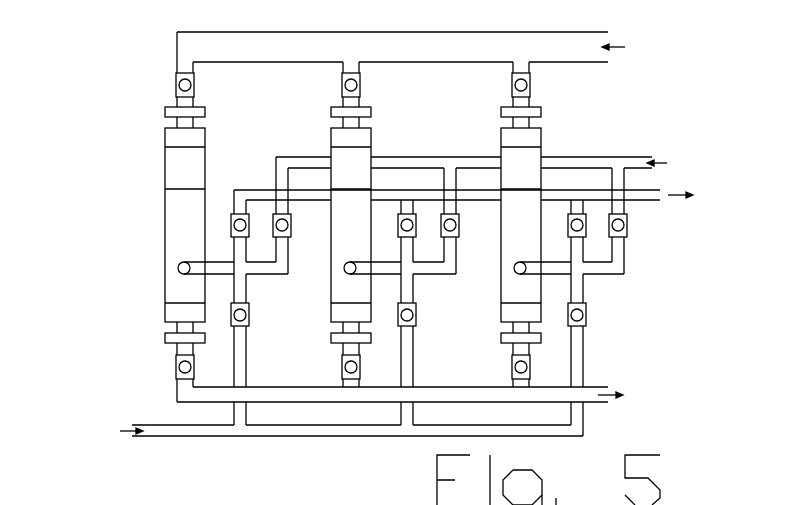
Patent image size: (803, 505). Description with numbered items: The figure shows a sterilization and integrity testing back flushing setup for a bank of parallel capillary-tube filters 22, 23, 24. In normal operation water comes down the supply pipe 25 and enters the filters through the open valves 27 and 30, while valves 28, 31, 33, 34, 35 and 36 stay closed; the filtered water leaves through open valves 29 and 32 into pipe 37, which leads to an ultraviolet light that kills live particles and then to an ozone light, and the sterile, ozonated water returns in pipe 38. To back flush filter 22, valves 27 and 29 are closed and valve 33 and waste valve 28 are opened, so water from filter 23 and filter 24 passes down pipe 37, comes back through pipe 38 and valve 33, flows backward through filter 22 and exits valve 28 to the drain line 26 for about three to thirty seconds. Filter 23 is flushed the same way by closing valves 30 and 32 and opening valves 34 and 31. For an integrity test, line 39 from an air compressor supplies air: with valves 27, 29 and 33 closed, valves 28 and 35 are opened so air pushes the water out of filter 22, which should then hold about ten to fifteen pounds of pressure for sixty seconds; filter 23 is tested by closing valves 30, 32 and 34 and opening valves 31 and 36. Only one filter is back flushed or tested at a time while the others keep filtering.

The filter 22 is at (226, 226).
The filter 23 is at (393, 226).
The filter 24 is at (562, 226).
The supply pipe 25 is at (409, 47).
The drain line 26 is at (590, 391).
The valve 27 is at (176, 86).
The waste valve 28 is at (176, 367).
The valve 29 is at (239, 219).
The valve 30 is at (342, 86).
The valve 31 is at (342, 367).
The valve 32 is at (406, 219).
The valve 33 is at (280, 219).
The valve 34 is at (450, 219).
The valve 35 is at (248, 315).
The valve 36 is at (413, 314).
The pipe 37 is at (660, 192).
The pipe 38 is at (619, 163).
The line 39 is at (168, 430).